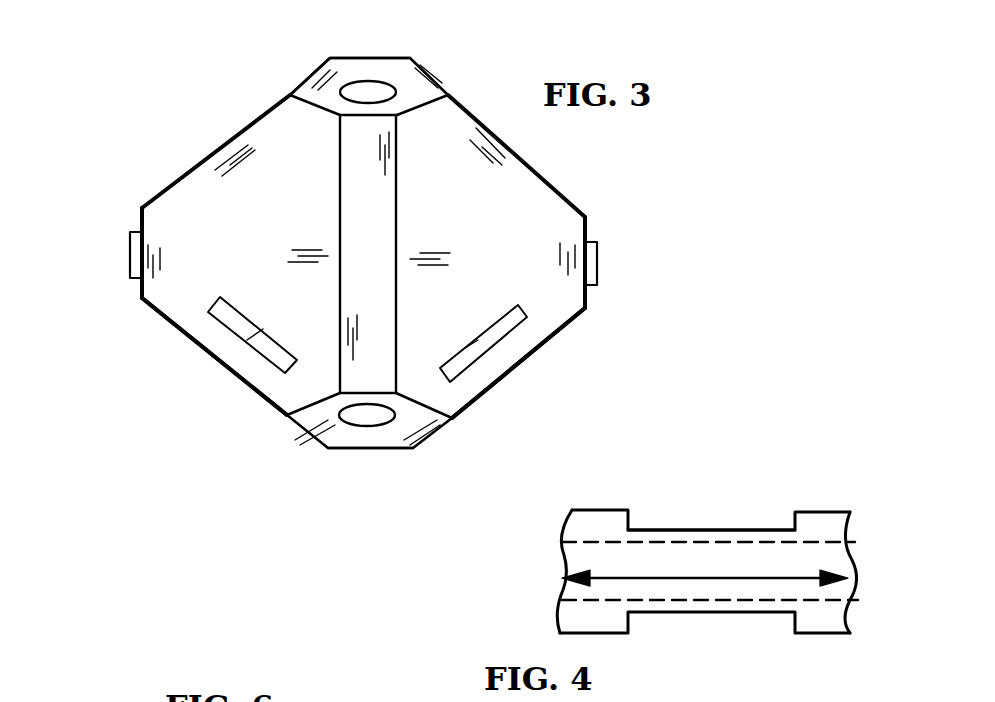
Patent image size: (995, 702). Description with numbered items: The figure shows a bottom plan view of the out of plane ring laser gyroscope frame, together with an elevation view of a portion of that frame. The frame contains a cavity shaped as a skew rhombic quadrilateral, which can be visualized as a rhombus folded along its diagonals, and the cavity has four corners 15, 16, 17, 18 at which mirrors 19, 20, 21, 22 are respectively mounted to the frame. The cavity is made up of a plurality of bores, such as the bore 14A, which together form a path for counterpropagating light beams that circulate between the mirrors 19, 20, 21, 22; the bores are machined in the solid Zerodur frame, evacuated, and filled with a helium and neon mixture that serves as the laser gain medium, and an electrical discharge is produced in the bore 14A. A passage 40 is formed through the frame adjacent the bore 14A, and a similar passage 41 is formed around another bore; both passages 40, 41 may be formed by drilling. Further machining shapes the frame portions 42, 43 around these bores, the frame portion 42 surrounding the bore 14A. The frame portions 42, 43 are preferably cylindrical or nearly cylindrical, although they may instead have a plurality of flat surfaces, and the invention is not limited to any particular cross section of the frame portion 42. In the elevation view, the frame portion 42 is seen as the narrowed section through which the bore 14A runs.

In FIG. 3, the corner 15 is at (372, 456).
In FIG. 3, the corner 16 is at (616, 277).
In FIG. 3, the corner 17 is at (302, 63).
In FIG. 3, the corner 18 is at (136, 218).
In FIG. 3, the mirror 19 is at (340, 418).
In FIG. 3, the mirror 20 is at (598, 253).
In FIG. 3, the mirror 21 is at (398, 92).
In FIG. 3, the mirror 22 is at (130, 265).
In FIG. 3, the passage 40 is at (482, 346).
In FIG. 3, the passage 41 is at (250, 338).
In FIG. 3, the frame portion 42 is at (505, 374).
In FIG. 4, the frame portion 42 is at (730, 530).
In FIG. 3, the frame portion 43 is at (206, 353).
In FIG. 4, the bore 14A is at (680, 545).